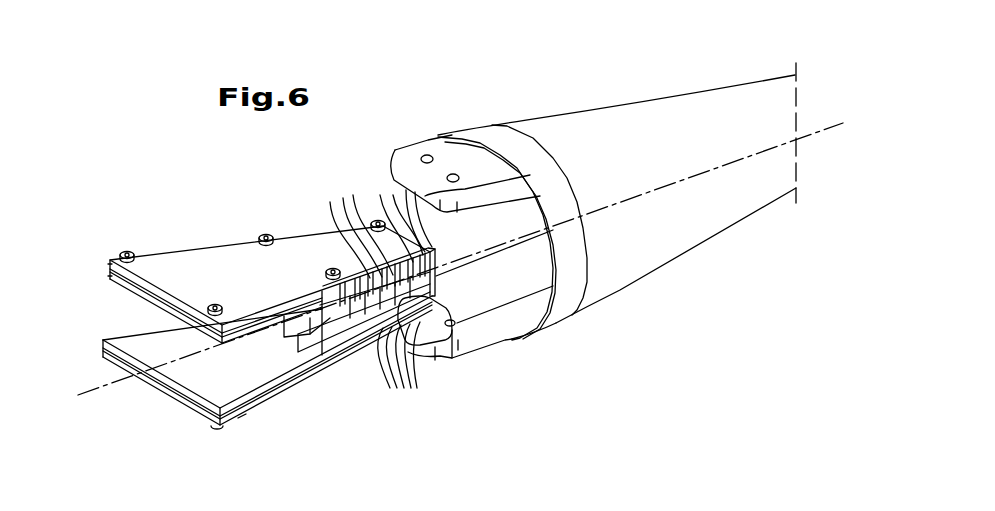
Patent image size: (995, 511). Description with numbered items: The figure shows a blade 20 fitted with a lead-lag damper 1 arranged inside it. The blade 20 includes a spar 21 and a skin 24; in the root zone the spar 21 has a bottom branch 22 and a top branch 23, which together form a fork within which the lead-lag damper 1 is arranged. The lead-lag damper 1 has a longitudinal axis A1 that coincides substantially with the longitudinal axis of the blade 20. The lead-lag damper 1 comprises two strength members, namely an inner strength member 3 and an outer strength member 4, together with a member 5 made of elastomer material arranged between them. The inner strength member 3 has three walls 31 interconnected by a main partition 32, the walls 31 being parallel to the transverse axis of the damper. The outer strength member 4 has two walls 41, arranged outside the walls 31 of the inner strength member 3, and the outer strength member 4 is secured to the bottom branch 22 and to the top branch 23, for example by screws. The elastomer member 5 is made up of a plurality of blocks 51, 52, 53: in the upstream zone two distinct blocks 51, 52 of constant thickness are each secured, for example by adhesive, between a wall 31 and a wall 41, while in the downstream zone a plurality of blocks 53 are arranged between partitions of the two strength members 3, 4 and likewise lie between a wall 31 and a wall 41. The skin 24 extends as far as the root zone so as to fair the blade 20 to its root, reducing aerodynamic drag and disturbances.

The lead-lag damper 1 is at (258, 320).
The inner strength member 3 is at (258, 289).
The outer strength member 4 is at (190, 215).
The wall 41 is at (235, 262).
The wall 31 is at (136, 337).
The main partition 32 is at (315, 350).
The elastomer material member 5 is at (254, 325).
The block 51 is at (110, 268).
The block 52 is at (243, 400).
The block 53 is at (376, 298).
The blade 20 is at (592, 212).
The spar 21 is at (483, 233).
The bottom branch 22 is at (478, 340).
The top branch 23 is at (438, 160).
The skin 24 is at (675, 118).
The longitudinal axis A1 is at (828, 128).